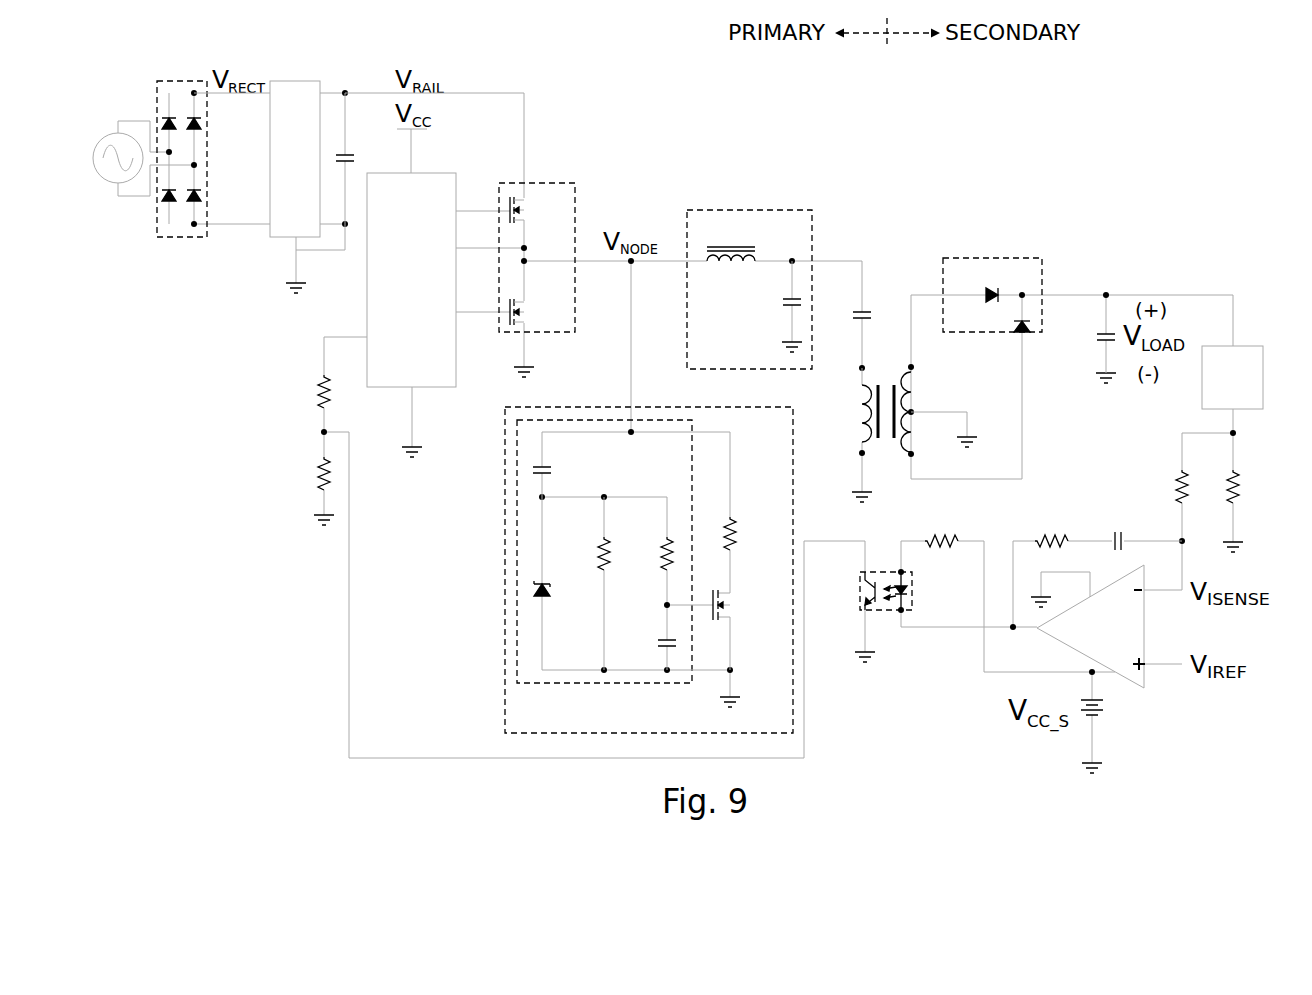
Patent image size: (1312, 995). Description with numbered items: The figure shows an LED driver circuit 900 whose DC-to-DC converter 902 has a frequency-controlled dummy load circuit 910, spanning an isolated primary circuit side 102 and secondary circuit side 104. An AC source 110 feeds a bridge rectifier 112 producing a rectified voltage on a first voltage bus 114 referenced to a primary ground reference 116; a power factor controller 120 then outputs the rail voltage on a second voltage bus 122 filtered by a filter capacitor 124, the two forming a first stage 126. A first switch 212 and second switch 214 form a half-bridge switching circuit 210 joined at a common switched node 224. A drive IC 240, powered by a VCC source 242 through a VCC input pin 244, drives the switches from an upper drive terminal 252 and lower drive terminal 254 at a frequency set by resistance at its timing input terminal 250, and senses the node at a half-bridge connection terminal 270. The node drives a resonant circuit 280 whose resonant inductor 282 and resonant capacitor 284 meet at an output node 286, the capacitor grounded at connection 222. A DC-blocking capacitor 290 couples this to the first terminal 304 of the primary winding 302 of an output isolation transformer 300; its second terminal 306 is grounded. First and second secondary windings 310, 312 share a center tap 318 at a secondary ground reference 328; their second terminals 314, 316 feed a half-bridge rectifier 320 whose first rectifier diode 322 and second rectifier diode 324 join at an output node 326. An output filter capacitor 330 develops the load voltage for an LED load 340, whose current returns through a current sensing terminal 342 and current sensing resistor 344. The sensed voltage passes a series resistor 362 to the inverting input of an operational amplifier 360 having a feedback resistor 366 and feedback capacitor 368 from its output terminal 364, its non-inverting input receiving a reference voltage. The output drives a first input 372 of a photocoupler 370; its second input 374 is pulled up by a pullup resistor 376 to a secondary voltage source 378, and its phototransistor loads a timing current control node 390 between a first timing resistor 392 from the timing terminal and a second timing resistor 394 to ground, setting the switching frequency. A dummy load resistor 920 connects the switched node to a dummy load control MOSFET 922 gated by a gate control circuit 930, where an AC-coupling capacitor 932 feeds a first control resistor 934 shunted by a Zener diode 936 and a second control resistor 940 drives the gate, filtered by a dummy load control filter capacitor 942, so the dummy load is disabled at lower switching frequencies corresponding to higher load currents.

The primary side 102 is at (815, 112).
The secondary side 104 is at (957, 112).
The AC source 110 is at (122, 133).
The bridge rectifier 112 is at (186, 80).
The rectified voltage node 114 is at (260, 98).
The primary ground 116 is at (290, 284).
The power factor correction circuit 120 is at (318, 80).
The rail voltage node 122 is at (524, 92).
The rail capacitor 124 is at (347, 157).
The front end power stage 126 is at (332, 61).
The half-bridge switch pair 210 is at (530, 183).
The upper switch transistor 212 is at (525, 217).
The lower switch transistor 214 is at (525, 315).
The ground connection of resonant capacitor 222 is at (783, 344).
The half-bridge node 224 is at (527, 260).
The half-bridge controller 240 is at (445, 387).
The VCC supply node 242 is at (427, 130).
The VCC supply connection 244 is at (413, 167).
The RT terminal connection 250 is at (367, 335).
The upper gate drive connection 252 is at (458, 210).
The lower gate drive connection 254 is at (458, 313).
The half-bridge output connection 270 is at (458, 250).
The resonant tank 280 is at (723, 210).
The resonant inductor 282 is at (722, 247).
The resonant capacitor 284 is at (787, 303).
The resonant tank node 286 is at (790, 263).
The DC blocking capacitor 290 is at (865, 312).
The transformer 300 is at (888, 452).
The primary winding 302 is at (865, 410).
The primary winding first terminal 304 is at (860, 367).
The primary winding second terminal 306 is at (862, 453).
The secondary winding 310 is at (912, 390).
The secondary winding lower portion 312 is at (913, 426).
The secondary winding first terminal 314 is at (912, 365).
The secondary winding second terminal 316 is at (913, 456).
The secondary winding center tap 318 is at (912, 410).
The output rectifier 320 is at (993, 258).
The first rectifier diode 322 is at (988, 293).
The second rectifier diode 324 is at (1022, 332).
The rectified output node 326 is at (1025, 292).
The secondary ground 328 is at (970, 437).
The output filter capacitor 330 is at (1102, 337).
The LED load 340 is at (1243, 347).
The LED load return node 342 is at (1235, 435).
The current sense resistor 344 is at (1237, 487).
The operational amplifier 360 is at (1145, 673).
The sense feedback resistor 362 is at (1180, 485).
The op amp output node 364 is at (1037, 628).
The compensation resistor 366 is at (1068, 535).
The compensation capacitor 368 is at (1117, 535).
The optocoupler 370 is at (862, 590).
The optocoupler LED cathode node 372 is at (901, 612).
The optocoupler LED anode node 374 is at (903, 572).
The optocoupler series resistor 376 is at (955, 535).
The secondary supply voltage source 378 is at (1103, 700).
The RT divider node 390 is at (323, 432).
The upper RT resistor 392 is at (322, 395).
The lower RT resistor 394 is at (323, 480).
The LED driver with dimming control 900 is at (1148, 218).
The primary side power circuit 902 is at (566, 102).
The dimming control circuit 910 is at (647, 407).
The pull-up resistor 920 is at (733, 547).
The control transistor 922 is at (733, 610).
The bias network 930 is at (603, 682).
The bias capacitor 932 is at (547, 472).
The bias resistor 934 is at (600, 560).
The zener diode 936 is at (545, 593).
The gate resistor 940 is at (663, 560).
The gate capacitor 942 is at (662, 642).